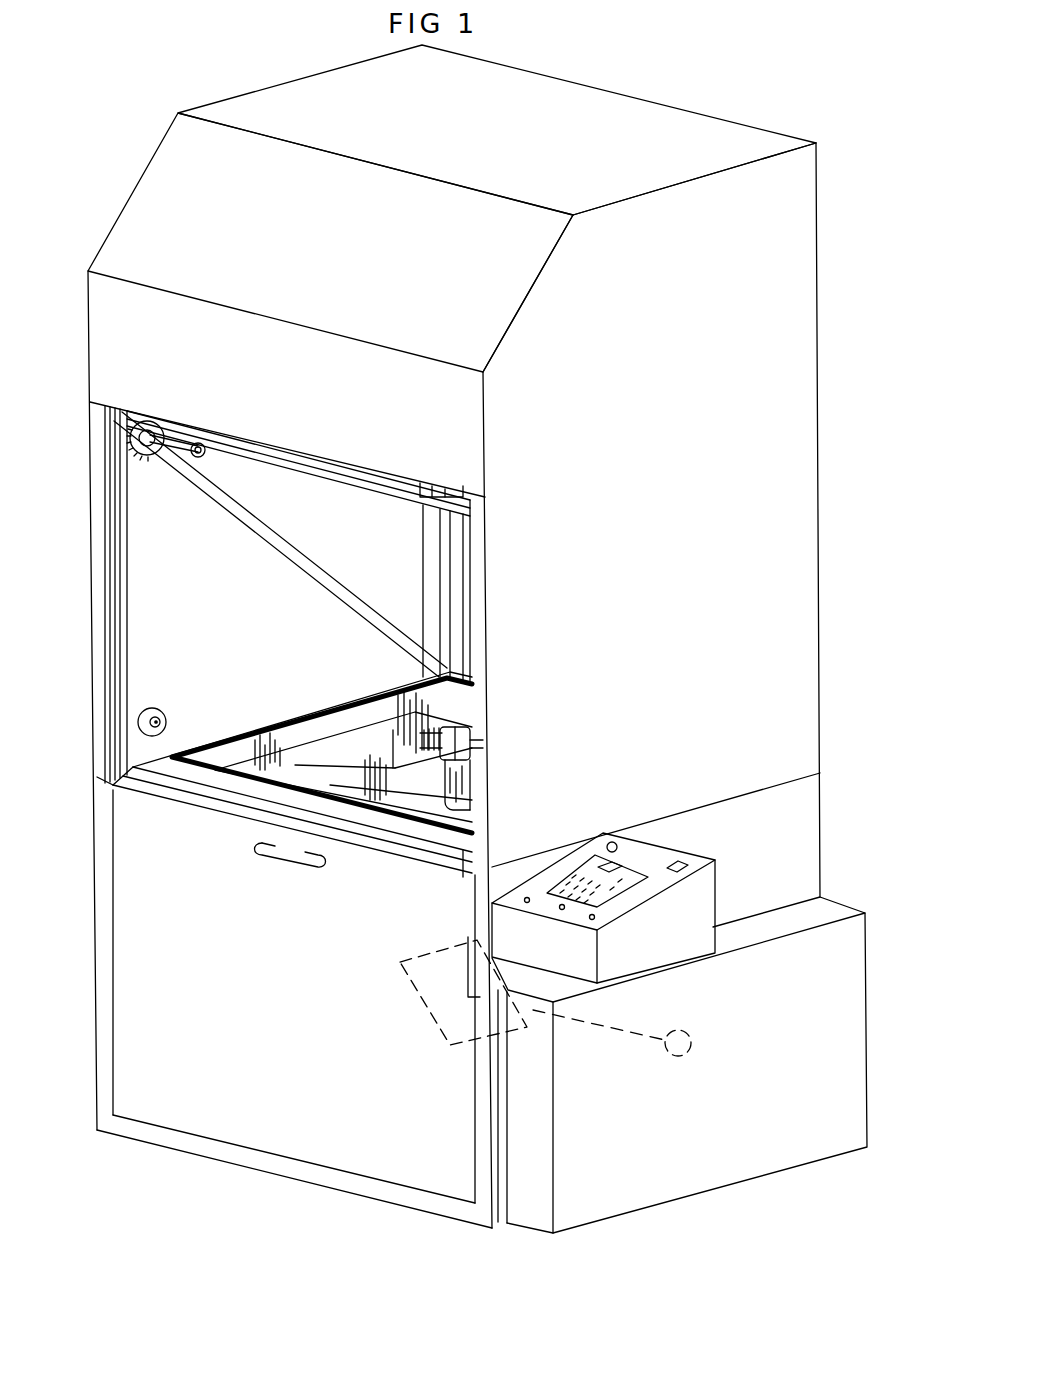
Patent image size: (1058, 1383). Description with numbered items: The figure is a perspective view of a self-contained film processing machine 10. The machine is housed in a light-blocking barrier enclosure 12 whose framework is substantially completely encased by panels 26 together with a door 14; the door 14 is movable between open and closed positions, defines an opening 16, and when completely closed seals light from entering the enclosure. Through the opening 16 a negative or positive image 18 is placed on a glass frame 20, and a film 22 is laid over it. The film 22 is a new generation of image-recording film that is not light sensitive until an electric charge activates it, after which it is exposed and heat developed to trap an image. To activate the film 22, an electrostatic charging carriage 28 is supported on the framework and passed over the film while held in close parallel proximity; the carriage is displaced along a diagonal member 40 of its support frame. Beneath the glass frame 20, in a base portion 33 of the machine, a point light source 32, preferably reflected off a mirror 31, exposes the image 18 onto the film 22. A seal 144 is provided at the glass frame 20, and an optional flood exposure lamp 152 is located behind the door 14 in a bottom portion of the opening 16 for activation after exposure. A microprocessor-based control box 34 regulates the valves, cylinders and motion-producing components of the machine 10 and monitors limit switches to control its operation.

The film processing machine 10 is at (438, 636).
The light-blocking barrier enclosure 12 is at (760, 500).
The door 14 is at (290, 1012).
The opening 16 is at (185, 619).
The negative (or positive) image 18 is at (437, 773).
The glass frame 20 is at (157, 760).
The film 22 is at (297, 770).
The panels 26 is at (490, 130).
The electrostatic charging carriage 28 is at (131, 488).
The mirror 31 is at (426, 1087).
The point light source 32 is at (692, 1043).
The base portion 33 is at (830, 827).
The microprocessor-based control box 34 is at (684, 1065).
The diagonal member 40 is at (273, 540).
The seal 144 is at (443, 762).
The flood exposure lamp 152 is at (140, 718).